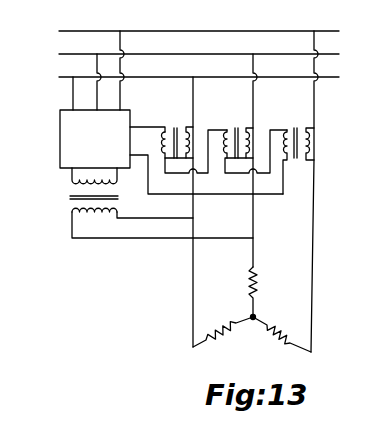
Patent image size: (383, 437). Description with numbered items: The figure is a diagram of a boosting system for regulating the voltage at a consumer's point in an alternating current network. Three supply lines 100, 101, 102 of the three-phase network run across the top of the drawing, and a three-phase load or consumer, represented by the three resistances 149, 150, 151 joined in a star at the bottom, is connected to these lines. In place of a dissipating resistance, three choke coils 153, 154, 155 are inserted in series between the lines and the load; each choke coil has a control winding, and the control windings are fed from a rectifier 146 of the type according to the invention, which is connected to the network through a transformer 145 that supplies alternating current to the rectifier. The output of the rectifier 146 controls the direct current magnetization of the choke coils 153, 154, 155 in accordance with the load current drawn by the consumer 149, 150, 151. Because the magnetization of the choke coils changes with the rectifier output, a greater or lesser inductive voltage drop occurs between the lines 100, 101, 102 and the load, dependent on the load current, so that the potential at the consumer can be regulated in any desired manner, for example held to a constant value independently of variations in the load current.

The line 100 is at (215, 82).
The line 101 is at (215, 59).
The line 102 is at (215, 36).
The transformer 145 is at (70, 199).
The rectifier 146 is at (60, 143).
The three phase load 149 is at (254, 281).
The three phase load 150 is at (223, 330).
The three phase load 151 is at (277, 331).
The choke coil 153 is at (194, 141).
The choke coil 154 is at (254, 141).
The choke coil 155 is at (297, 151).